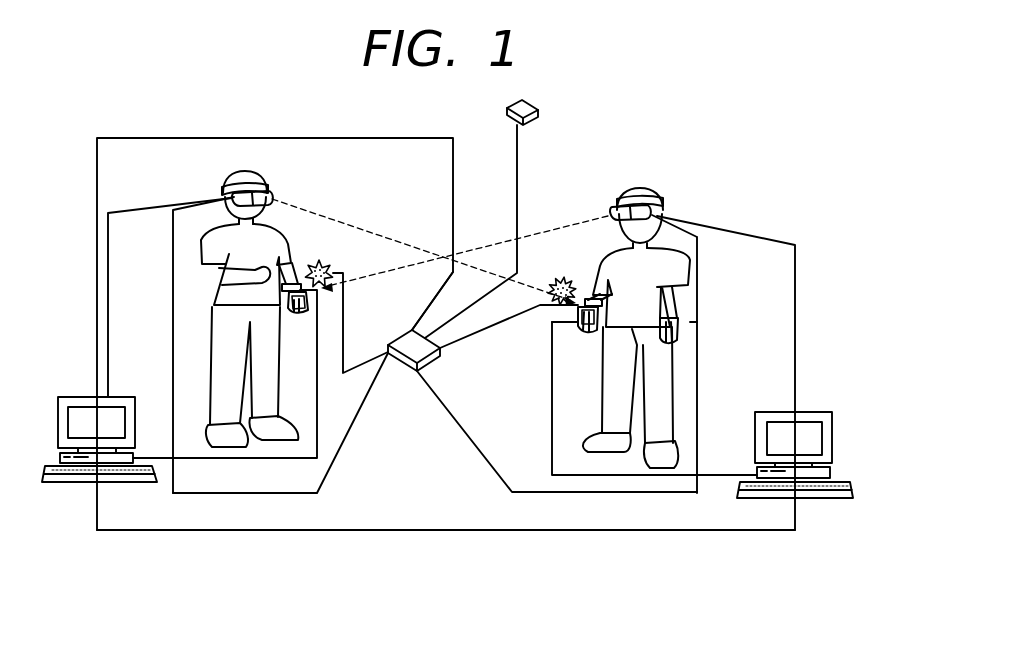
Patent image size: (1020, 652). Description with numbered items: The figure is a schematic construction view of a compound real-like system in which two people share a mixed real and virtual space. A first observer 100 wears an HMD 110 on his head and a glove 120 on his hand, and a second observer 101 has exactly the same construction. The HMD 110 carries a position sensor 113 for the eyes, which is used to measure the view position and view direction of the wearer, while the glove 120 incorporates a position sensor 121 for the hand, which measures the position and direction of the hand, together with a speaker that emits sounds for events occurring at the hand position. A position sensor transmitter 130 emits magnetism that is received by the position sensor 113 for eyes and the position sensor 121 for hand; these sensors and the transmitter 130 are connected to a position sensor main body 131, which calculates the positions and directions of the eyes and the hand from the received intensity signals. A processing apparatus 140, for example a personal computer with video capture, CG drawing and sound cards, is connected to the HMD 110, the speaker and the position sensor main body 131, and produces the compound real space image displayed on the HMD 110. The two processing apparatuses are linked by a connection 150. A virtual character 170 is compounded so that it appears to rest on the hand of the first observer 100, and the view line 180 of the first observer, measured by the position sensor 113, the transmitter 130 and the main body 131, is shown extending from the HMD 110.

The first observer 100 is at (603, 390).
The second observer 101 is at (277, 387).
The HMD (Head Mount Display) 110 is at (265, 192).
The position sensor for eyes 113 is at (258, 182).
The glove 120 is at (305, 307).
The position sensor for hand 121 is at (298, 266).
The position sensor transmitter 130 is at (512, 105).
The position sensor main body 131 is at (402, 342).
The processing apparatus 140 is at (72, 398).
The network 150 is at (690, 532).
The virtual character 170 is at (550, 290).
The view line 180 is at (568, 227).